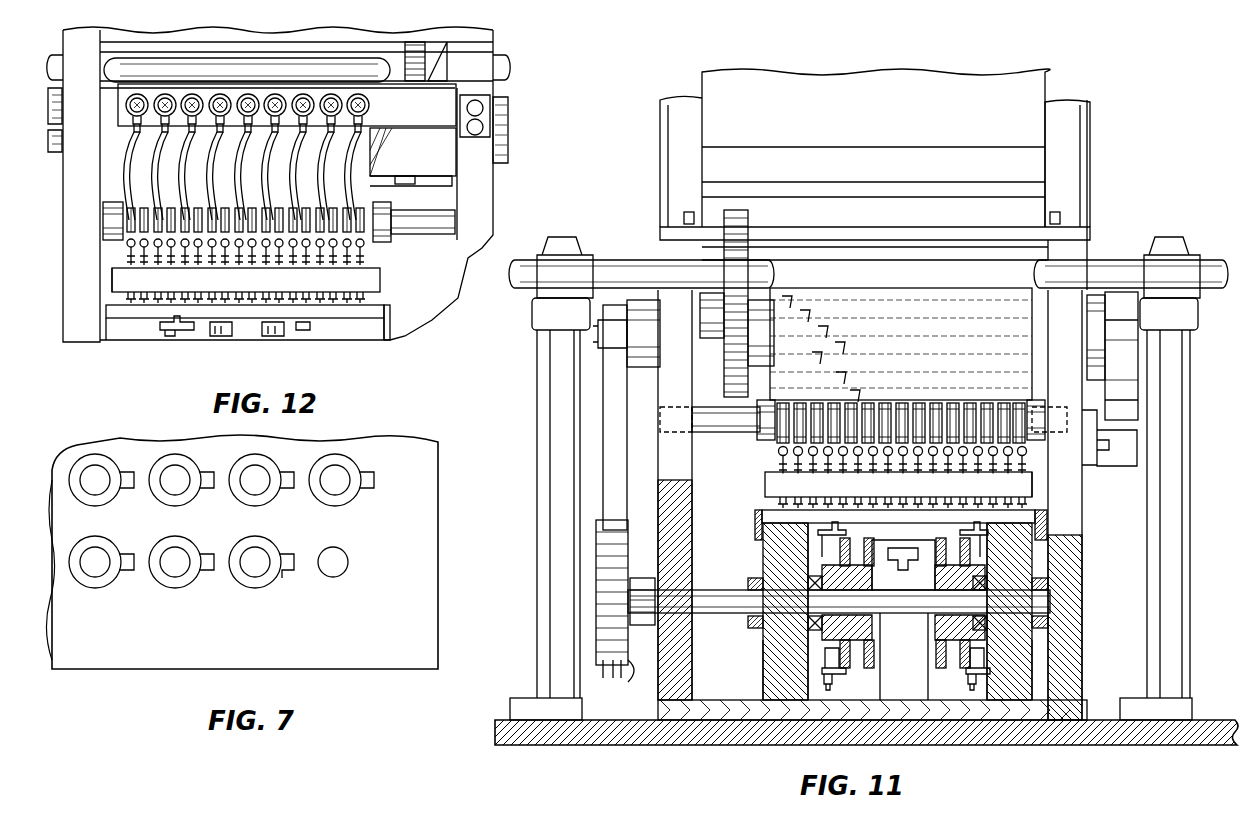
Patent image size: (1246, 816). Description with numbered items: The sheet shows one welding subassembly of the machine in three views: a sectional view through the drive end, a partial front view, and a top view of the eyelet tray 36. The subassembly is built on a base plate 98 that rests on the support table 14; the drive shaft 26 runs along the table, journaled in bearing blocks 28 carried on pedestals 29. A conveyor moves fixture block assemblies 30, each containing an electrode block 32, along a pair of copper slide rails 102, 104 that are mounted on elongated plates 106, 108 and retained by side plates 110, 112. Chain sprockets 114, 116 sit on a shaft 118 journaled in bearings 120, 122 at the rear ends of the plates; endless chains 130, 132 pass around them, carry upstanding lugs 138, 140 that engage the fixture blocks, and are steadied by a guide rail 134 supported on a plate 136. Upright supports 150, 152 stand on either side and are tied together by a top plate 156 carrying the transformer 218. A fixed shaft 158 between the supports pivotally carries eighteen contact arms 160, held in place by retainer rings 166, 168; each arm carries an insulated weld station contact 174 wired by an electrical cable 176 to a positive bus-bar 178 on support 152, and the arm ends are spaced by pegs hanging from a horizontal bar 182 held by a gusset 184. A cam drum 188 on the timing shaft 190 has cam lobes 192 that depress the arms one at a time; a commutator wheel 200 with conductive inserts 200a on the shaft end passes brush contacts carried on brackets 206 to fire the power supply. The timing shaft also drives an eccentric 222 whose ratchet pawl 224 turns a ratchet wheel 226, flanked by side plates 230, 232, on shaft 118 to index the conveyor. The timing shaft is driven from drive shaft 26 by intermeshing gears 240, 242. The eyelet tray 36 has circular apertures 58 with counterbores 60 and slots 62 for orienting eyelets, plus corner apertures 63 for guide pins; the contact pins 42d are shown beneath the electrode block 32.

In FIG. 11, the support table 14 is at (693, 745).
In FIG. 12, the drive shaft 26 is at (60, 58).
In FIG. 11, the drive shaft 26 is at (655, 267).
In FIG. 11, the bearing blocks 28 is at (562, 237).
In FIG. 11, the pedestals 29 is at (537, 395).
In FIG. 12, the fixture block assemblies 30 is at (105, 283).
In FIG. 11, the fixture block assemblies 30 is at (1037, 485).
In FIG. 12, the electrode block 32 is at (227, 290).
In FIG. 11, the electrode block 32 is at (762, 488).
In FIG. 7, the eyelet tray 36 is at (425, 572).
In FIG. 12, the contact pins 42d is at (320, 260).
In FIG. 11, the contact pins 42d is at (777, 452).
In FIG. 7, the circular aperture 58 is at (246, 490).
In FIG. 7, the counterbore 60 is at (248, 586).
In FIG. 7, the slot 62 is at (284, 576).
In FIG. 7, the apertures 63 is at (342, 564).
In FIG. 11, the base plate 98 is at (890, 710).
In FIG. 12, the slide rail 102 is at (353, 332).
In FIG. 11, the slide rail 102 is at (780, 540).
In FIG. 12, the slide rail 104 is at (130, 333).
In FIG. 11, the slide rail 104 is at (1028, 540).
In FIG. 11, the elongated plate 106 is at (777, 654).
In FIG. 11, the elongated plate 108 is at (1028, 645).
In FIG. 11, the retaining side plate 110 is at (758, 525).
In FIG. 11, the retaining side plate 112 is at (1048, 520).
In FIG. 11, the chain sprocket 114 is at (830, 638).
In FIG. 11, the chain sprocket 116 is at (975, 638).
In FIG. 11, the shaft 118 is at (697, 606).
In FIG. 11, the bearing 120 is at (788, 579).
In FIG. 11, the bearing 122 is at (1033, 574).
In FIG. 12, the endless chain 130 is at (302, 333).
In FIG. 11, the endless chain 130 is at (854, 668).
In FIG. 12, the endless chain 132 is at (195, 333).
In FIG. 11, the endless chain 132 is at (949, 670).
In FIG. 12, the guide rail 134 is at (242, 333).
In FIG. 11, the guide rail 134 is at (912, 547).
In FIG. 11, the plate 136 is at (909, 667).
In FIG. 11, the upstanding lugs 138 is at (842, 546).
In FIG. 11, the lugs 140 is at (983, 546).
In FIG. 12, the support 150 is at (82, 198).
In FIG. 11, the support 150 is at (1073, 602).
In FIG. 12, the support 152 is at (482, 178).
In FIG. 11, the support 152 is at (698, 511).
In FIG. 11, the top plate 156 is at (1084, 244).
In FIG. 12, the fixed shaft 158 is at (415, 232).
In FIG. 11, the fixed shaft 158 is at (738, 432).
In FIG. 11, the contact arms 160 is at (935, 396).
In FIG. 12, the retainer ring 166 is at (385, 242).
In FIG. 11, the retainer ring 166 is at (762, 440).
In FIG. 12, the retainer ring 168 is at (103, 220).
In FIG. 11, the retainer ring 168 is at (1044, 436).
In FIG. 12, the contact 174 is at (185, 258).
In FIG. 12, the electrical cable 176 is at (140, 175).
In FIG. 12, the positive bus-bar 178 is at (416, 113).
In FIG. 12, the horizontal bar 182 is at (380, 188).
In FIG. 12, the gusset 184 is at (440, 156).
In FIG. 11, the cam drum 188 is at (926, 327).
In FIG. 11, the timing shaft 190 is at (704, 308).
In FIG. 11, the cam lobes 192 is at (795, 300).
In FIG. 11, the commutator wheel 200 is at (1138, 385).
In FIG. 11, the electrically conductive inserts 200a is at (1130, 378).
In FIG. 11, the brackets 206 is at (1134, 440).
In FIG. 11, the transformer 218 is at (820, 72).
In FIG. 11, the eccentric 222 is at (640, 332).
In FIG. 11, the ratchet pawl 224 is at (618, 387).
In FIG. 11, the ratchet wheel 226 is at (591, 598).
In FIG. 11, the side plate 230 is at (642, 685).
In FIG. 11, the side plate 232 is at (600, 663).
In FIG. 11, the gear 240 is at (745, 360).
In FIG. 11, the gear 242 is at (746, 218).